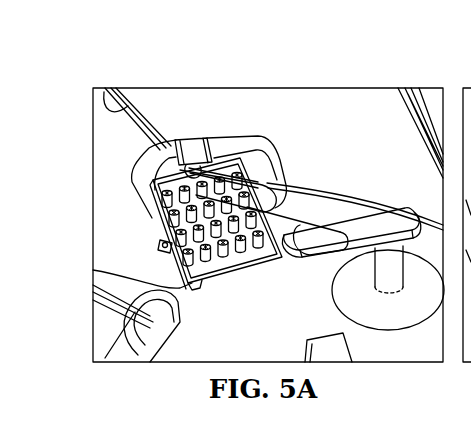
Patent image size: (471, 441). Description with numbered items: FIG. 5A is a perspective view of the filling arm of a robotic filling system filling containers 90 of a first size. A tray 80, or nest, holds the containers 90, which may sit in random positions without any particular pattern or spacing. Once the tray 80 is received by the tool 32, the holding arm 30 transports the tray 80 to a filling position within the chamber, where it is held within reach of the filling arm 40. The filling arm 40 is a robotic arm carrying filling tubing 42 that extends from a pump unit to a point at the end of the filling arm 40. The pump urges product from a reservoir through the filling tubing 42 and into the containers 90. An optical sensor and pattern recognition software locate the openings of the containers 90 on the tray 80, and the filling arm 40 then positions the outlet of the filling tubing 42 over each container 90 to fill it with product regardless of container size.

The holding arm 30 is at (158, 102).
The tool 32 is at (250, 147).
The filling arm 40 is at (363, 222).
The filling tubing 42 is at (327, 198).
The tray 80 is at (180, 262).
The containers 90 is at (202, 280).